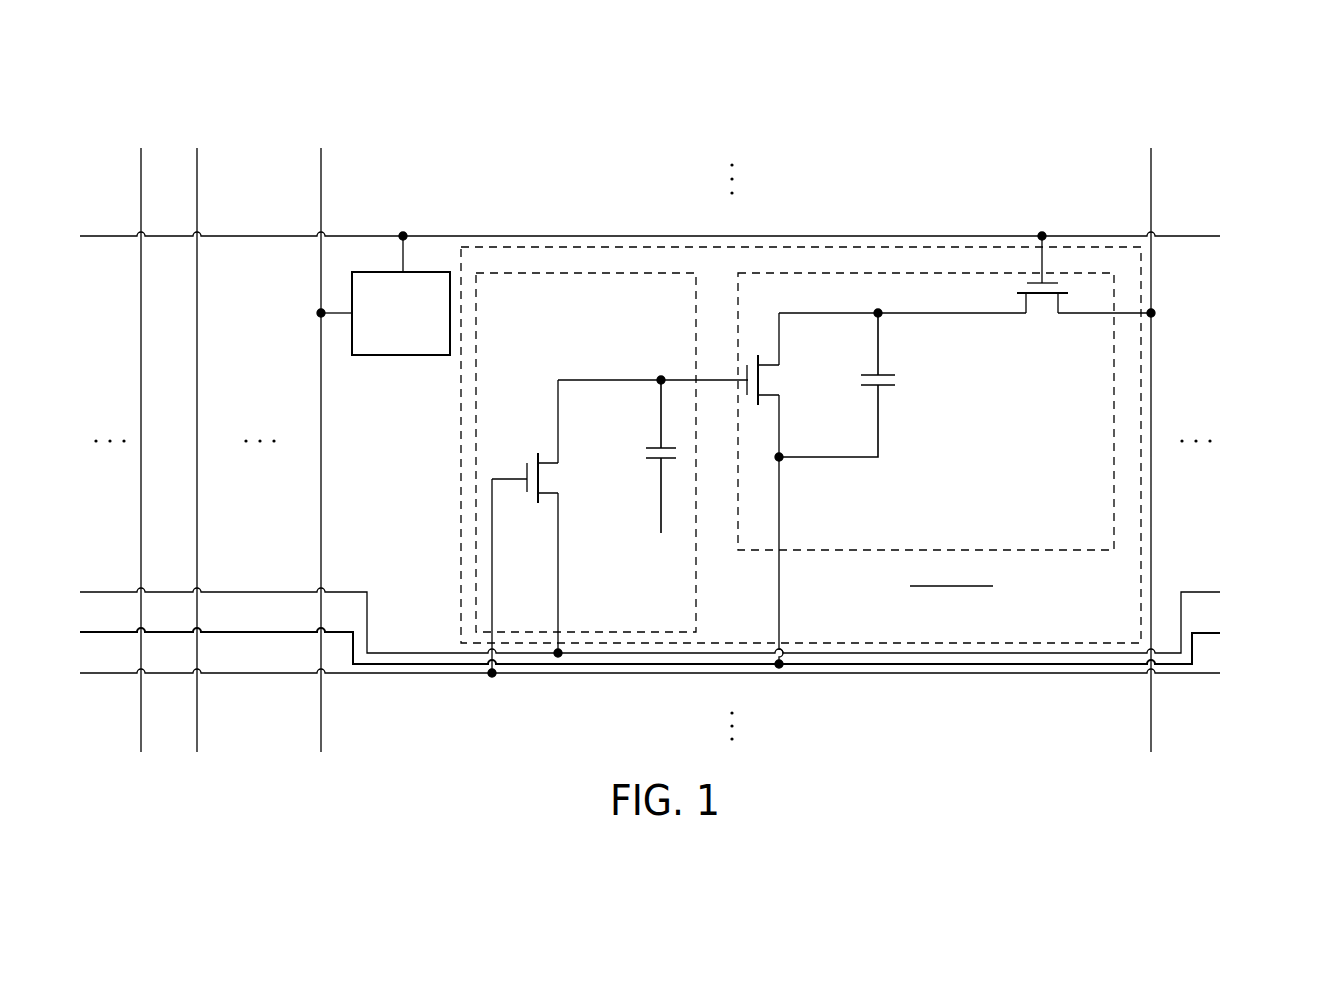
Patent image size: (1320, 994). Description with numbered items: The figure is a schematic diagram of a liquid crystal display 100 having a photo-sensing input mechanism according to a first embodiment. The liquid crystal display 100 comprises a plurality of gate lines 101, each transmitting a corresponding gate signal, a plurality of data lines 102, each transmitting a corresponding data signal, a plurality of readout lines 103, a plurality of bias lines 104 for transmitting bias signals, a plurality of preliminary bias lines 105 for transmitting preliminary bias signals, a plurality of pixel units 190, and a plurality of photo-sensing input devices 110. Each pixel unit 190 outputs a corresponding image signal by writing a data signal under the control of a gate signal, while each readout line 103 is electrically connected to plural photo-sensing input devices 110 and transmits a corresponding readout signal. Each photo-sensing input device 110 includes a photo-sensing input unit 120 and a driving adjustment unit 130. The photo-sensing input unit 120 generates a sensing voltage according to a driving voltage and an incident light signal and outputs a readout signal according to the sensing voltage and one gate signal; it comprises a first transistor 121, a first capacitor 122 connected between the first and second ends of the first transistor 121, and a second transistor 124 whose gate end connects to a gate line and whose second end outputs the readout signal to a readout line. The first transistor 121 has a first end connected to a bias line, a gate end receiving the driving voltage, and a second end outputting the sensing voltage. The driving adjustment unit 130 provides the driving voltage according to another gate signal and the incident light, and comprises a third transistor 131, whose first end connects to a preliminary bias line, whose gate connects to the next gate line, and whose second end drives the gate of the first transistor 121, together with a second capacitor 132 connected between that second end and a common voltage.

The liquid crystal display 100 is at (988, 108).
The gate line 101 is at (232, 240).
The data line 102 is at (197, 212).
The readout line 103 is at (141, 212).
The bias line 104 is at (1198, 632).
The preliminary bias line 105 is at (1198, 590).
The photo-sensing input device 110 is at (787, 247).
The photo-sensing input unit 120 is at (925, 273).
The first transistor 121 is at (787, 392).
The first capacitor 122 is at (898, 382).
The second transistor 124 is at (1042, 318).
The driving adjustment unit 130 is at (583, 270).
The third transistor 131 is at (553, 478).
The second capacitor 132 is at (648, 455).
The pixel unit 190 is at (391, 355).